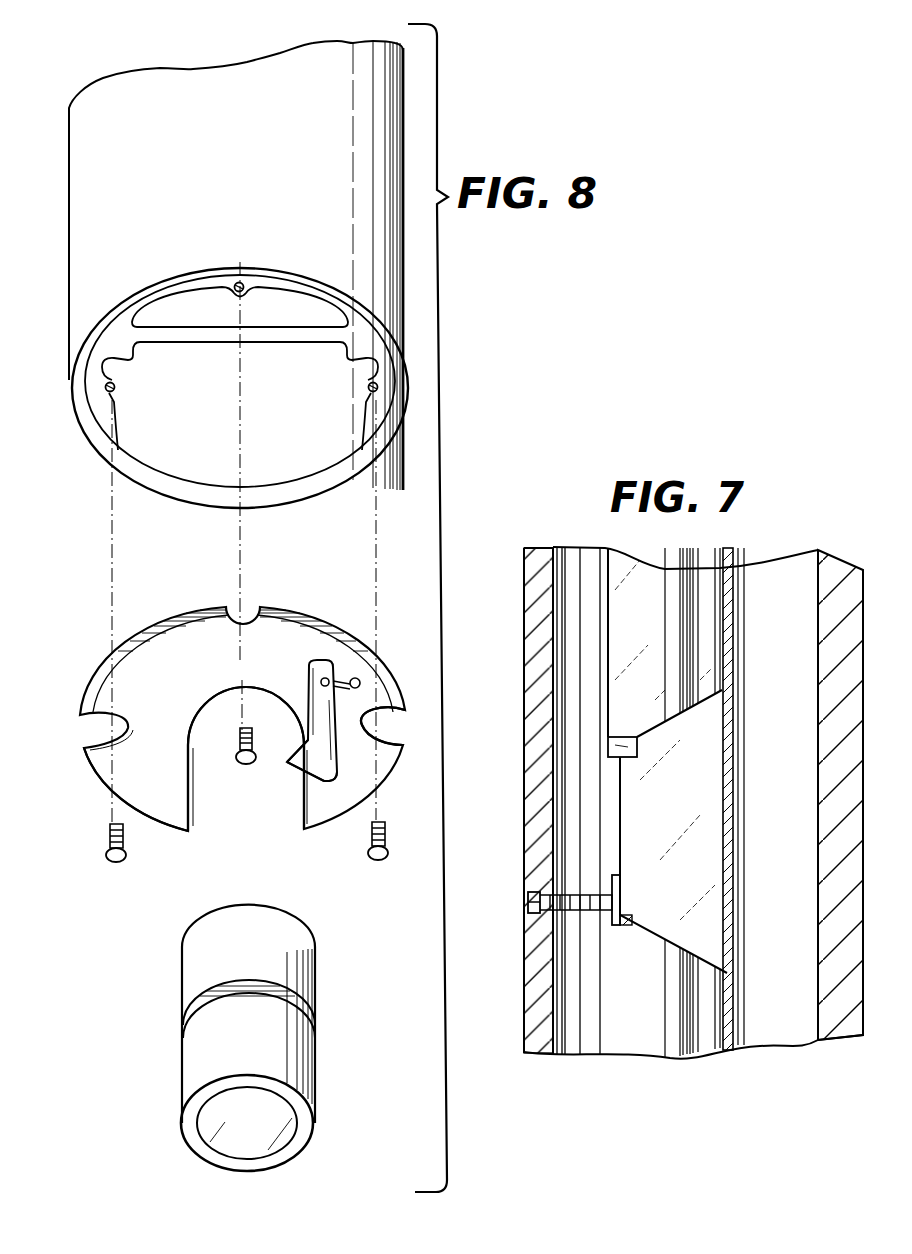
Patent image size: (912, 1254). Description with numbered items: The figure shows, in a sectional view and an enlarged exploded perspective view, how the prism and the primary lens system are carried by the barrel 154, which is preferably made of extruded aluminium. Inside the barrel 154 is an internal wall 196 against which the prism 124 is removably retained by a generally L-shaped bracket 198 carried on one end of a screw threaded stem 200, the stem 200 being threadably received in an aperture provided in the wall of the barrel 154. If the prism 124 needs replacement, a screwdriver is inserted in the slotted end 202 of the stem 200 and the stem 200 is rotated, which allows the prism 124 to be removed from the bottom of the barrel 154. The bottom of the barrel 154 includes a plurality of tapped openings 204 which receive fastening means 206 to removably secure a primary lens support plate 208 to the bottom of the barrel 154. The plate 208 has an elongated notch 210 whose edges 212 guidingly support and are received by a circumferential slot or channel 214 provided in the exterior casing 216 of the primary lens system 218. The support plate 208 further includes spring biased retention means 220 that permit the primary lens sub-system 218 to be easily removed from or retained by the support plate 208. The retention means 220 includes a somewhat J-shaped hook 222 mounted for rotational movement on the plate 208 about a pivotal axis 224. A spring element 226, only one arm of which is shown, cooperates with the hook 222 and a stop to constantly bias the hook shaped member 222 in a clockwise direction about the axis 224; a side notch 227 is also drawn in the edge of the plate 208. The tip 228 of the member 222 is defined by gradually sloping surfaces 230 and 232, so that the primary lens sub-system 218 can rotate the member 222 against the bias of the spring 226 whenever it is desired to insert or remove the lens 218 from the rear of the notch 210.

In FIG. 8, the barrel 154 is at (100, 200).
In FIG. 7, the barrel 154 is at (527, 713).
In FIG. 8, the internal wall 196 is at (273, 343).
In FIG. 7, the internal wall 196 is at (738, 596).
In FIG. 8, the tapped openings 204 is at (240, 283).
In FIG. 8, the primary lens support plate 208 is at (133, 650).
In FIG. 8, the elongated notch 210 is at (245, 850).
In FIG. 8, the edges 212 is at (302, 822).
In FIG. 8, the fastening means 206 is at (372, 857).
In FIG. 8, the spring biased retention means 220 is at (303, 697).
In FIG. 8, the J-shaped hook 222 is at (331, 784).
In FIG. 8, the pivotal axis 224 is at (323, 673).
In FIG. 8, the spring element 226 is at (358, 690).
In FIG. 8, the side notch 227 is at (378, 718).
In FIG. 8, the tip 228 is at (285, 770).
In FIG. 8, the sloping surface 230 is at (300, 778).
In FIG. 8, the sloping surface 232 is at (285, 770).
In FIG. 8, the exterior casing 216 is at (300, 965).
In FIG. 8, the circumferential slot 214 is at (310, 1025).
In FIG. 8, the primary lens system 218 is at (245, 1140).
In FIG. 7, the prism 124 is at (702, 831).
In FIG. 7, the L-shaped bracket 198 is at (620, 926).
In FIG. 7, the screw threaded stem 200 is at (600, 893).
In FIG. 7, the slotted end 202 is at (527, 906).